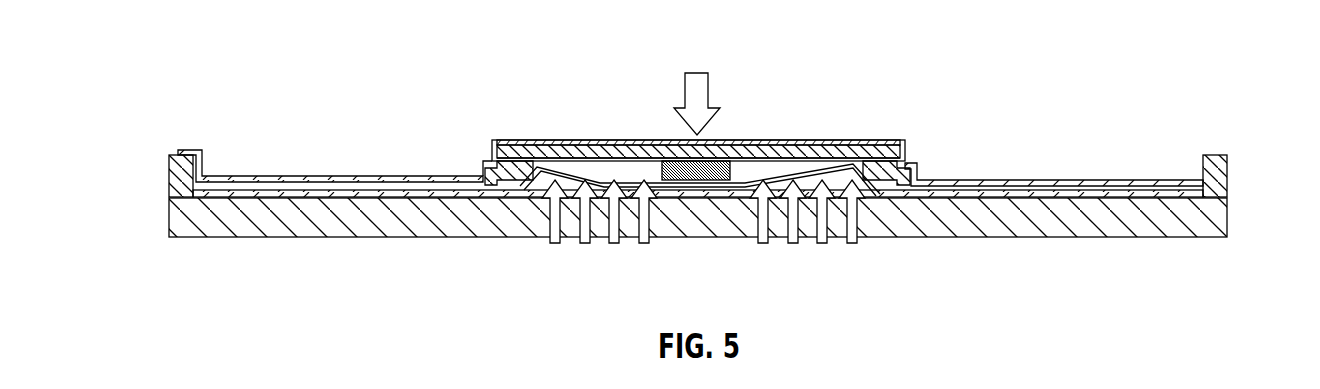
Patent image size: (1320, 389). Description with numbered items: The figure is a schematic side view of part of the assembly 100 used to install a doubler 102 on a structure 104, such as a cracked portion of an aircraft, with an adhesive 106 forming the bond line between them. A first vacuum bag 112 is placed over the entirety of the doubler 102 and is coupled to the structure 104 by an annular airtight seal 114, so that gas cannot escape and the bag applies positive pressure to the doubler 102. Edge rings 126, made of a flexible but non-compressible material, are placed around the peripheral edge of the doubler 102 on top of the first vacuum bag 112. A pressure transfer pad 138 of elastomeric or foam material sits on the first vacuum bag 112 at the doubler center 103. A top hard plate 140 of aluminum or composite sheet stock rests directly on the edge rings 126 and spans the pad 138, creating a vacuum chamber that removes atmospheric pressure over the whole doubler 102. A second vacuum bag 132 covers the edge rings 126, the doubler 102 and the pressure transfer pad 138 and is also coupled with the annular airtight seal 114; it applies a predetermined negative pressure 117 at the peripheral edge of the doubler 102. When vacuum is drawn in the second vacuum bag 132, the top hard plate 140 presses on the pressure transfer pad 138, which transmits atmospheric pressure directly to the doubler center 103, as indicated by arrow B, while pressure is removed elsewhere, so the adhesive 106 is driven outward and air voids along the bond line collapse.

The assembly 100 is at (1122, 38).
The doubler 102 is at (665, 203).
The doubler center 103 is at (720, 194).
The structure 104 is at (1222, 217).
The adhesive 106 is at (870, 200).
The first vacuum bag 112 is at (262, 187).
The annular airtight seal 114 is at (1222, 170).
The predetermined negative pressure 117 is at (553, 231).
The edge rings 126 is at (893, 146).
The second vacuum bag 132 is at (1043, 183).
The pressure transfer pad 138 is at (658, 149).
The top hard plate 140 is at (817, 150).
The arrow B is at (697, 72).